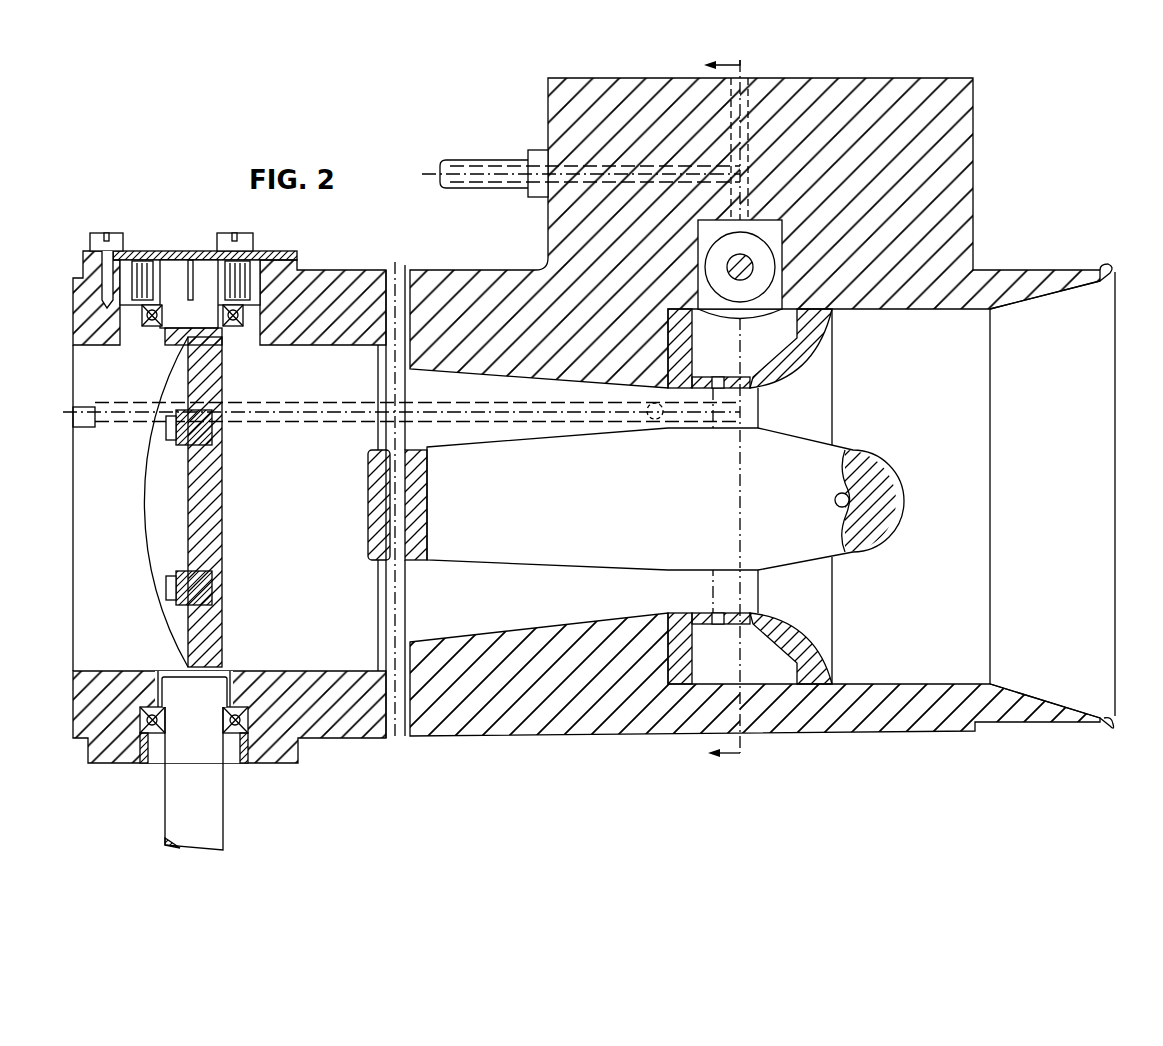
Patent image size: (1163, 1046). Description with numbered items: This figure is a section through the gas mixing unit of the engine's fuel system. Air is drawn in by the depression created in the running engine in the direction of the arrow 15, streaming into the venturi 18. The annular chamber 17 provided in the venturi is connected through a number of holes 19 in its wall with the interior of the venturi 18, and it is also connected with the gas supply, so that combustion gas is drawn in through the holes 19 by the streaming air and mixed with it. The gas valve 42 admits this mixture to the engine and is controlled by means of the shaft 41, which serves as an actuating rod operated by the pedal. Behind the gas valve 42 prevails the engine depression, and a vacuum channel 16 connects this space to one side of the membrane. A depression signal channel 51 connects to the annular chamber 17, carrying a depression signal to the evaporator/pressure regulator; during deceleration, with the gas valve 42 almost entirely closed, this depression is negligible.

The arrow 15 is at (1030, 417).
The vacuum channel 16 is at (284, 407).
The annular chamber 17 is at (772, 670).
The venturi 18 is at (576, 610).
The holes 19 is at (718, 384).
The shaft 41 is at (203, 797).
The gas valve 42 is at (218, 612).
The depression signal channel 51 is at (478, 170).